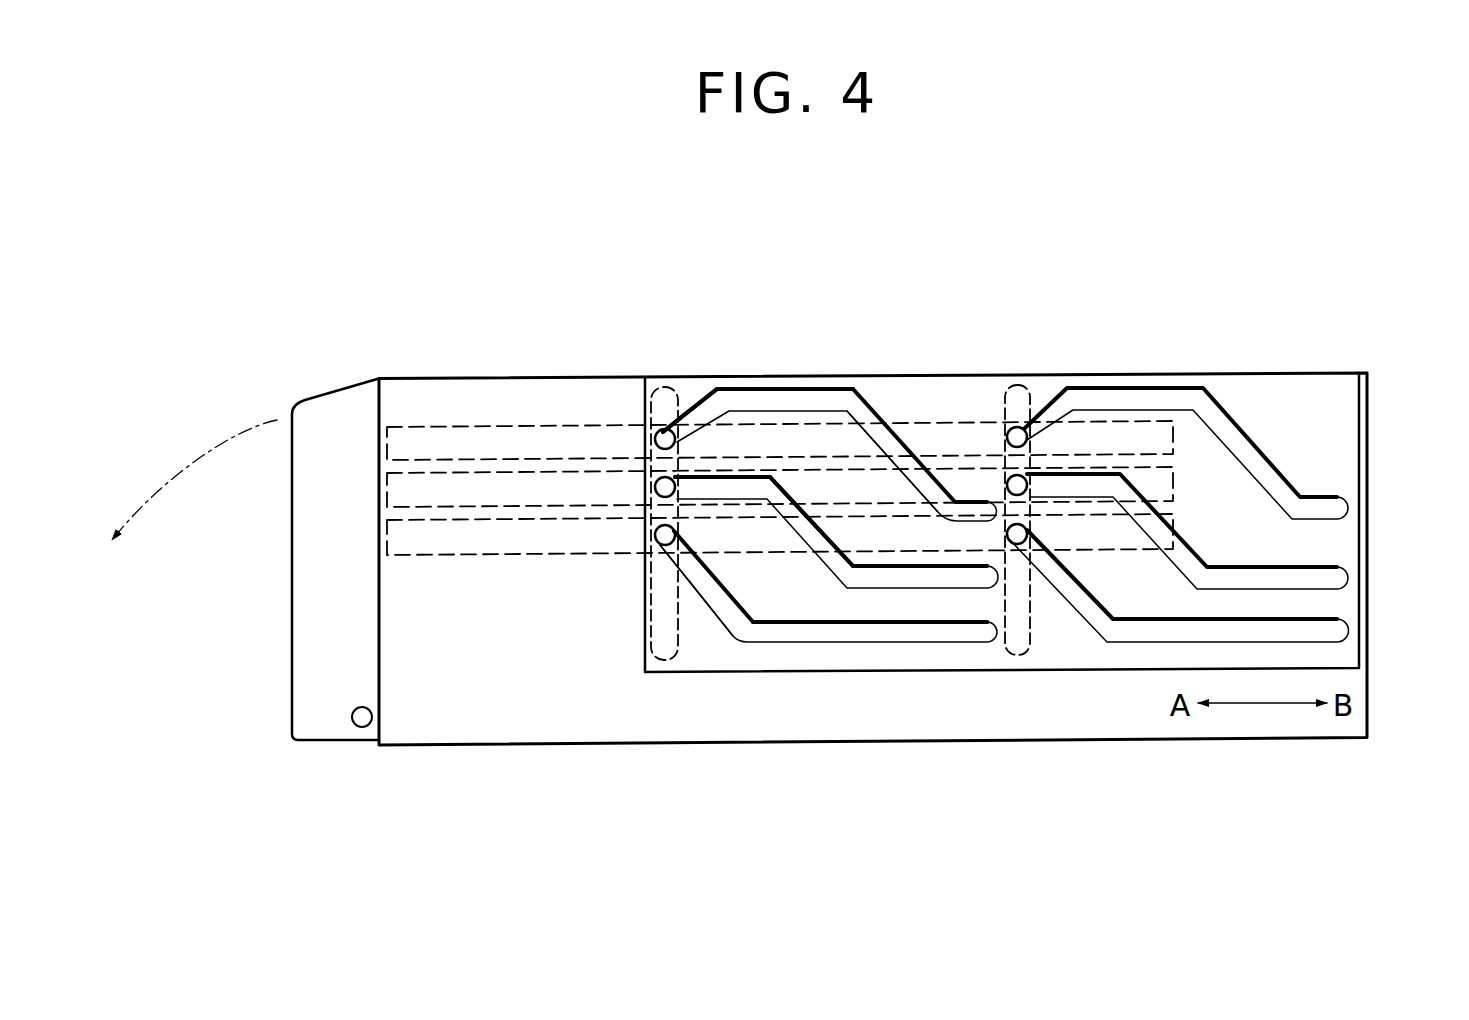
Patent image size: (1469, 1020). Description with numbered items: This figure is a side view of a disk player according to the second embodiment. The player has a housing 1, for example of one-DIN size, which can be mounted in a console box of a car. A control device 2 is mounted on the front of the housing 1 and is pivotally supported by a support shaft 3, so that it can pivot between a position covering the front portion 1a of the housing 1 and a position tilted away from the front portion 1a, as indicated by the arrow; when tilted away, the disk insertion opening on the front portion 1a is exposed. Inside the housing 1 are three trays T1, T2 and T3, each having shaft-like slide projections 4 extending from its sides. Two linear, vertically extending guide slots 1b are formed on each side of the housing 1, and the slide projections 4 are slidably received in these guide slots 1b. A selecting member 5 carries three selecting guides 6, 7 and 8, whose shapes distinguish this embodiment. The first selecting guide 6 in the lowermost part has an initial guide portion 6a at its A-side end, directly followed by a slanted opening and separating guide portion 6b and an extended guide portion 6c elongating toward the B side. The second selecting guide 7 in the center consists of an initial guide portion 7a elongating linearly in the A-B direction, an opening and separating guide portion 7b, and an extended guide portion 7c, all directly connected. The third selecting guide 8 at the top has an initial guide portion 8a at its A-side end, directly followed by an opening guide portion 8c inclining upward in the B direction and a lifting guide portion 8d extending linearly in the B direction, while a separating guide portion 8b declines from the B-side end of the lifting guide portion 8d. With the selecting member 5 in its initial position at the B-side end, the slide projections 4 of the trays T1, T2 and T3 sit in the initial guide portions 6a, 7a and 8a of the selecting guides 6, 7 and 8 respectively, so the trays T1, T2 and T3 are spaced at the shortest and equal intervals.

The housing 1 is at (1207, 745).
The front portion 1a is at (386, 540).
The guide slots 1b is at (650, 624).
The control device 2 is at (307, 655).
The support shaft 3 is at (359, 727).
The slide projections 4 is at (654, 537).
The selecting member 5 is at (1102, 675).
The first selecting guide 6 is at (733, 645).
The initial guide portion 6a is at (655, 545).
The opening and separating guide portion 6b is at (722, 615).
The extended guide portion 6c is at (968, 638).
The second selecting guide 7 is at (870, 594).
The initial guide portion 7a is at (740, 492).
The opening and separating guide portion 7b is at (812, 540).
The extended guide portion 7c is at (930, 580).
The third selecting guide 8 is at (917, 437).
The initial guide portion 8a is at (662, 430).
The separating guide portion 8b is at (893, 427).
The opening guide portion 8c is at (707, 408).
The lifting guide portion 8d is at (807, 398).
The tray T1 is at (535, 520).
The tray T2 is at (477, 473).
The tray T3 is at (409, 427).